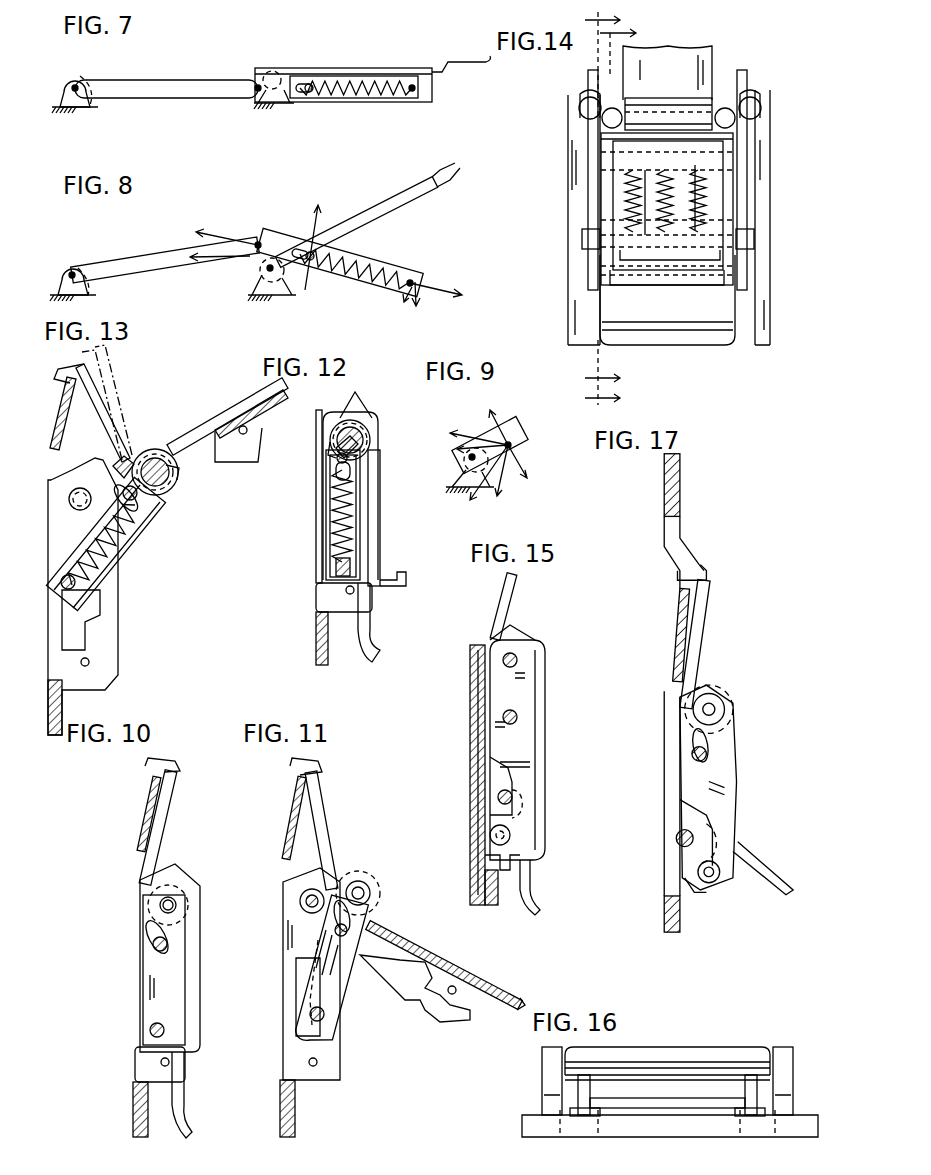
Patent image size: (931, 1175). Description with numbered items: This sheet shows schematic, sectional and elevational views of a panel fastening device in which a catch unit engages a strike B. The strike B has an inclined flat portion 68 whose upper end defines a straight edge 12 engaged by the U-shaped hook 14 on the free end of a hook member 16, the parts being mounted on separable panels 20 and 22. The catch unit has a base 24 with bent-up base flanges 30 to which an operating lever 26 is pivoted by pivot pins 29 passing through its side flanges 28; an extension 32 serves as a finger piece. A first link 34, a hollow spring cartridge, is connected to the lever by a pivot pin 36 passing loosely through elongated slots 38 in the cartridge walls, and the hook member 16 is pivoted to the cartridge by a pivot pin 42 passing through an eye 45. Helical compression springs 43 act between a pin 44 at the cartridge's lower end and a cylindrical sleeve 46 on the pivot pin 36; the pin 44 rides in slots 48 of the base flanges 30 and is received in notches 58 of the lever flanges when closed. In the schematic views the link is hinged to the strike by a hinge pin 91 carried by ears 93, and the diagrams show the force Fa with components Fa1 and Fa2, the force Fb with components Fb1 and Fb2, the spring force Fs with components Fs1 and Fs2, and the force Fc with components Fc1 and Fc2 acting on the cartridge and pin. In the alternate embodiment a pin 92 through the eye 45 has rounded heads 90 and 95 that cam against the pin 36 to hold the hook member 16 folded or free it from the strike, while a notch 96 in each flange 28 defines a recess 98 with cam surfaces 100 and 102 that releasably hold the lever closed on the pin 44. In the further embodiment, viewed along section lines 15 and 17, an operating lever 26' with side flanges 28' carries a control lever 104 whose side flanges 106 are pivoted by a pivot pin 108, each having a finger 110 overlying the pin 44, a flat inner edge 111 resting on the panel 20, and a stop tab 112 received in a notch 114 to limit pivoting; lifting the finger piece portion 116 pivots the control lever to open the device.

In FIG. 10, the straight edge 12 is at (180, 768).
In FIG. 11, the straight edge 12 is at (322, 766).
In FIG. 10, the U-shaped hook 14 is at (170, 762).
In FIG. 11, the U-shaped hook 14 is at (292, 760).
In FIG. 17, the U-shaped hook 14 is at (686, 548).
In FIG. 14, the section line 15— 15 is at (613, 210).
In FIG. 7, the hook member 16 is at (140, 80).
In FIG. 8, the hook member 16 is at (120, 265).
In FIG. 13, the hook member 16 is at (120, 392).
In FIG. 12, the hook member 16 is at (382, 522).
In FIG. 14, the hook member 16 is at (712, 58).
In FIG. 10, the hook member 16 is at (168, 820).
In FIG. 11, the hook member 16 is at (328, 820).
In FIG. 15, the hook member 16 is at (508, 603).
In FIG. 17, the hook member 16 is at (684, 596).
In FIG. 14, the section line 17— 17 is at (621, 206).
In FIG. 15, the panel 20 is at (470, 872).
In FIG. 7, the panel 22 is at (84, 110).
In FIG. 12, the base 24 is at (316, 640).
In FIG. 10, the base 24 is at (133, 1120).
In FIG. 11, the base 24 is at (280, 1115).
In FIG. 7, the operating lever 26 is at (373, 71).
In FIG. 8, the operating lever 26 is at (367, 215).
In FIG. 13, the operating lever 26 is at (227, 416).
In FIG. 12, the operating lever 26 is at (365, 537).
In FIG. 9, the operating lever 26 is at (490, 435).
In FIG. 14, the operating lever 26 is at (702, 209).
In FIG. 10, the operating lever 26 is at (176, 1001).
In FIG. 11, the operating lever 26 is at (445, 965).
In FIG. 15, the operating lever 26' is at (535, 742).
In FIG. 17, the operating lever 26' is at (722, 787).
In FIG. 12, the side flange 28 is at (319, 511).
In FIG. 10, the side flange 28 is at (141, 1064).
In FIG. 11, the side flange 28 is at (422, 990).
In FIG. 14, the side flange 28' is at (670, 92).
In FIG. 7, the pivot pin 29 is at (278, 74).
In FIG. 8, the pivot pin 29 is at (270, 284).
In FIG. 13, the pivot pin 29 is at (72, 490).
In FIG. 9, the pivot pin 29 is at (468, 460).
In FIG. 14, the pivot pin 29 is at (579, 110).
In FIG. 11, the pivot pin 29 is at (300, 903).
In FIG. 15, the pivot pin 29 is at (517, 656).
In FIG. 13, the base flange 30 is at (112, 672).
In FIG. 12, the base flange 30 is at (372, 600).
In FIG. 14, the base flange 30 is at (588, 278).
In FIG. 10, the base flange 30 is at (194, 1058).
In FIG. 11, the base flange 30 is at (330, 1060).
In FIG. 16, the base flange 30 is at (542, 1058).
In FIG. 13, the extension 32 is at (265, 396).
In FIG. 7, the first link 34 is at (372, 98).
In FIG. 8, the first link 34 is at (350, 278).
In FIG. 13, the first link 34 is at (110, 560).
In FIG. 12, the first link 34 is at (343, 515).
In FIG. 14, the first link 34 is at (723, 200).
In FIG. 10, the first link 34 is at (180, 972).
In FIG. 11, the first link 34 is at (340, 995).
In FIG. 7, the pivot pin 36 is at (311, 94).
In FIG. 8, the pivot pin 36 is at (310, 262).
In FIG. 13, the pivot pin 36 is at (140, 497).
In FIG. 12, the pivot pin 36 is at (336, 460).
In FIG. 9, the pivot pin 36 is at (520, 436).
In FIG. 14, the pivot pin 36 is at (740, 155).
In FIG. 10, the pivot pin 36 is at (168, 944).
In FIG. 11, the pivot pin 36 is at (348, 928).
In FIG. 15, the pivot pin 36 is at (518, 717).
In FIG. 17, the pivot pin 36 is at (729, 751).
In FIG. 7, the elongated slot 38 is at (302, 94).
In FIG. 8, the elongated slot 38 is at (296, 248).
In FIG. 13, the elongated slot 38 is at (132, 508).
In FIG. 12, the elongated slot 38 is at (352, 476).
In FIG. 10, the elongated slot 38 is at (162, 930).
In FIG. 11, the elongated slot 38 is at (350, 910).
In FIG. 17, the elongated slot 38 is at (728, 734).
In FIG. 7, the pivot pin 42 is at (255, 92).
In FIG. 8, the pivot pin 42 is at (262, 240).
In FIG. 13, the pivot pin 42 is at (155, 452).
In FIG. 12, the pivot pin 42 is at (372, 432).
In FIG. 14, the pivot pin 42 is at (602, 122).
In FIG. 11, the pivot pin 42 is at (364, 886).
In FIG. 7, the helical compression spring 43 is at (352, 80).
In FIG. 8, the helical compression spring 43 is at (378, 260).
In FIG. 13, the helical compression spring 43 is at (115, 540).
In FIG. 12, the helical compression spring 43 is at (330, 520).
In FIG. 14, the helical compression spring 43 is at (735, 214).
In FIG. 7, the pin 44 is at (414, 94).
In FIG. 8, the pin 44 is at (414, 278).
In FIG. 13, the pin 44 is at (82, 582).
In FIG. 12, the pin 44 is at (330, 562).
In FIG. 14, the pin 44 is at (735, 236).
In FIG. 10, the pin 44 is at (165, 1030).
In FIG. 11, the pin 44 is at (325, 1014).
In FIG. 15, the pin 44 is at (498, 797).
In FIG. 17, the pin 44 is at (659, 837).
In FIG. 12, the eye 45 is at (360, 405).
In FIG. 14, the eye 45 is at (645, 106).
In FIG. 10, the eye 45 is at (185, 895).
In FIG. 11, the eye 45 is at (356, 873).
In FIG. 17, the cylindrical sleeve 46 is at (736, 734).
In FIG. 13, the slot 48 is at (80, 618).
In FIG. 15, the notch 58 is at (494, 777).
In FIG. 17, the notch 58 is at (669, 832).
In FIG. 13, the inclined flat portion 68 is at (68, 420).
In FIG. 10, the inclined flat portion 68 is at (150, 792).
In FIG. 11, the inclined flat portion 68 is at (295, 795).
In FIG. 17, the inclined flat portion 68 is at (664, 580).
In FIG. 13, the rounded head 90 is at (177, 470).
In FIG. 12, the rounded head 90 is at (328, 446).
In FIG. 7, the hinge pin 91 is at (84, 80).
In FIG. 8, the hinge pin 91 is at (74, 270).
In FIG. 13, the pin 92 is at (172, 480).
In FIG. 12, the pin 92 is at (333, 420).
In FIG. 7, the ear 93 is at (76, 84).
In FIG. 8, the ear 93 is at (92, 287).
In FIG. 13, the rounded head 95 is at (122, 474).
In FIG. 12, the rounded head 95 is at (360, 422).
In FIG. 13, the notch 96 is at (218, 470).
In FIG. 11, the notch 96 is at (412, 990).
In FIG. 11, the recess 98 is at (428, 970).
In FIG. 11, the cam surface 100 is at (428, 1015).
In FIG. 11, the cam surface 102 is at (420, 1028).
In FIG. 14, the control lever 104 is at (730, 306).
In FIG. 15, the control lever 104 is at (532, 882).
In FIG. 17, the control lever 104 is at (763, 857).
In FIG. 16, the control lever 104 is at (690, 1050).
In FIG. 14, the side flange 106 is at (588, 256).
In FIG. 14, the pivot pin 108 is at (660, 275).
In FIG. 15, the pivot pin 108 is at (490, 832).
In FIG. 17, the pivot pin 108 is at (709, 872).
In FIG. 16, the pivot pin 108 is at (668, 1110).
In FIG. 15, the finger 110 is at (522, 795).
In FIG. 17, the finger 110 is at (671, 838).
In FIG. 15, the flat inner edge 111 is at (485, 858).
In FIG. 17, the flat inner edge 111 is at (705, 899).
In FIG. 16, the stop tab 112 is at (590, 1120).
In FIG. 16, the notch 114 is at (590, 1085).
In FIG. 15, the finger piece portion 116 is at (536, 905).
In FIG. 17, the finger piece portion 116 is at (788, 867).
In FIG. 7, the strike B is at (60, 88).
In FIG. 8, the strike B is at (56, 268).
In FIG. 10, the strike B is at (129, 816).
In FIG. 11, the strike B is at (274, 816).
In FIG. 17, the strike B is at (646, 531).
In FIG. 8, the force Fa is at (200, 265).
In FIG. 8, the force component Fa1 is at (212, 224).
In FIG. 8, the force component Fa2 is at (256, 260).
In FIG. 8, the force Fb is at (418, 308).
In FIG. 8, the force component Fb1 is at (430, 296).
In FIG. 8, the force component Fb2 is at (402, 298).
In FIG. 8, the force Fc is at (312, 212).
In FIG. 9, the force Fc is at (502, 490).
In FIG. 9, the force component Fc1 is at (458, 449).
In FIG. 9, the force component Fc2 is at (524, 470).
In FIG. 8, the spring force Fs is at (445, 290).
In FIG. 9, the spring force Fs is at (455, 430).
In FIG. 9, the force component Fs1 is at (482, 478).
In FIG. 9, the force component Fs2 is at (487, 414).